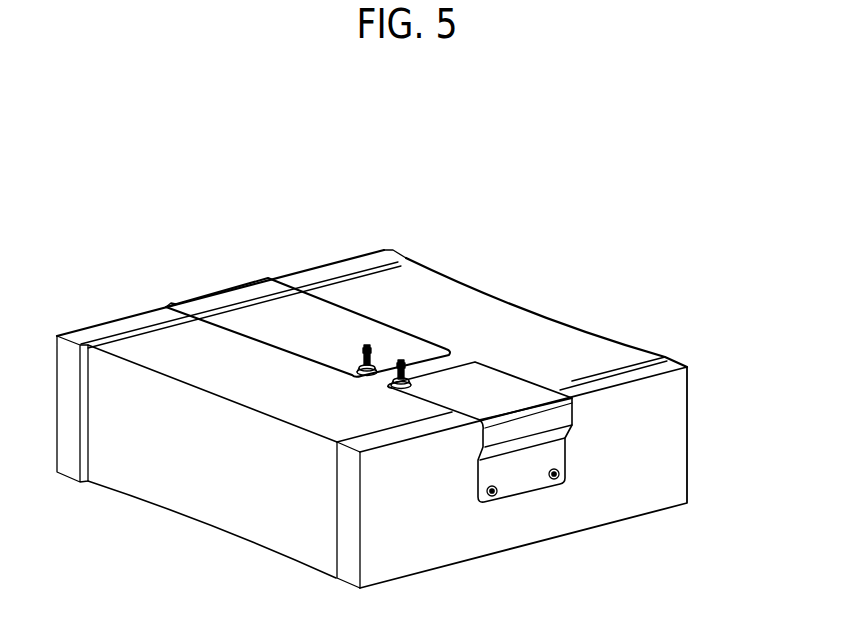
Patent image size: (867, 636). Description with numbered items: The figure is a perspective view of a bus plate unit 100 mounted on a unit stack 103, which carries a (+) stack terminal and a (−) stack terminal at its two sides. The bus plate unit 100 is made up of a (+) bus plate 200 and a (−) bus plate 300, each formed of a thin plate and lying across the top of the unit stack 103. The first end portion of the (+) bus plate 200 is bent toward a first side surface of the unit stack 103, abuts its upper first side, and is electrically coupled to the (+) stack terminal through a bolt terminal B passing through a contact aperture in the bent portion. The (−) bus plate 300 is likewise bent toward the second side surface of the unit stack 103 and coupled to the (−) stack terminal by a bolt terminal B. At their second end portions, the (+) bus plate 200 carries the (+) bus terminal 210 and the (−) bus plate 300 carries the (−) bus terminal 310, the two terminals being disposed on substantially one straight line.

The bus plate unit 100 is at (210, 273).
The unit stack 103 is at (663, 413).
The (+) bus plate 200 is at (569, 478).
The (+) bus terminal 210 is at (402, 360).
The (−) bus plate 300 is at (218, 302).
The (−) bus terminal 310 is at (367, 345).
The bolt terminal B is at (497, 496).